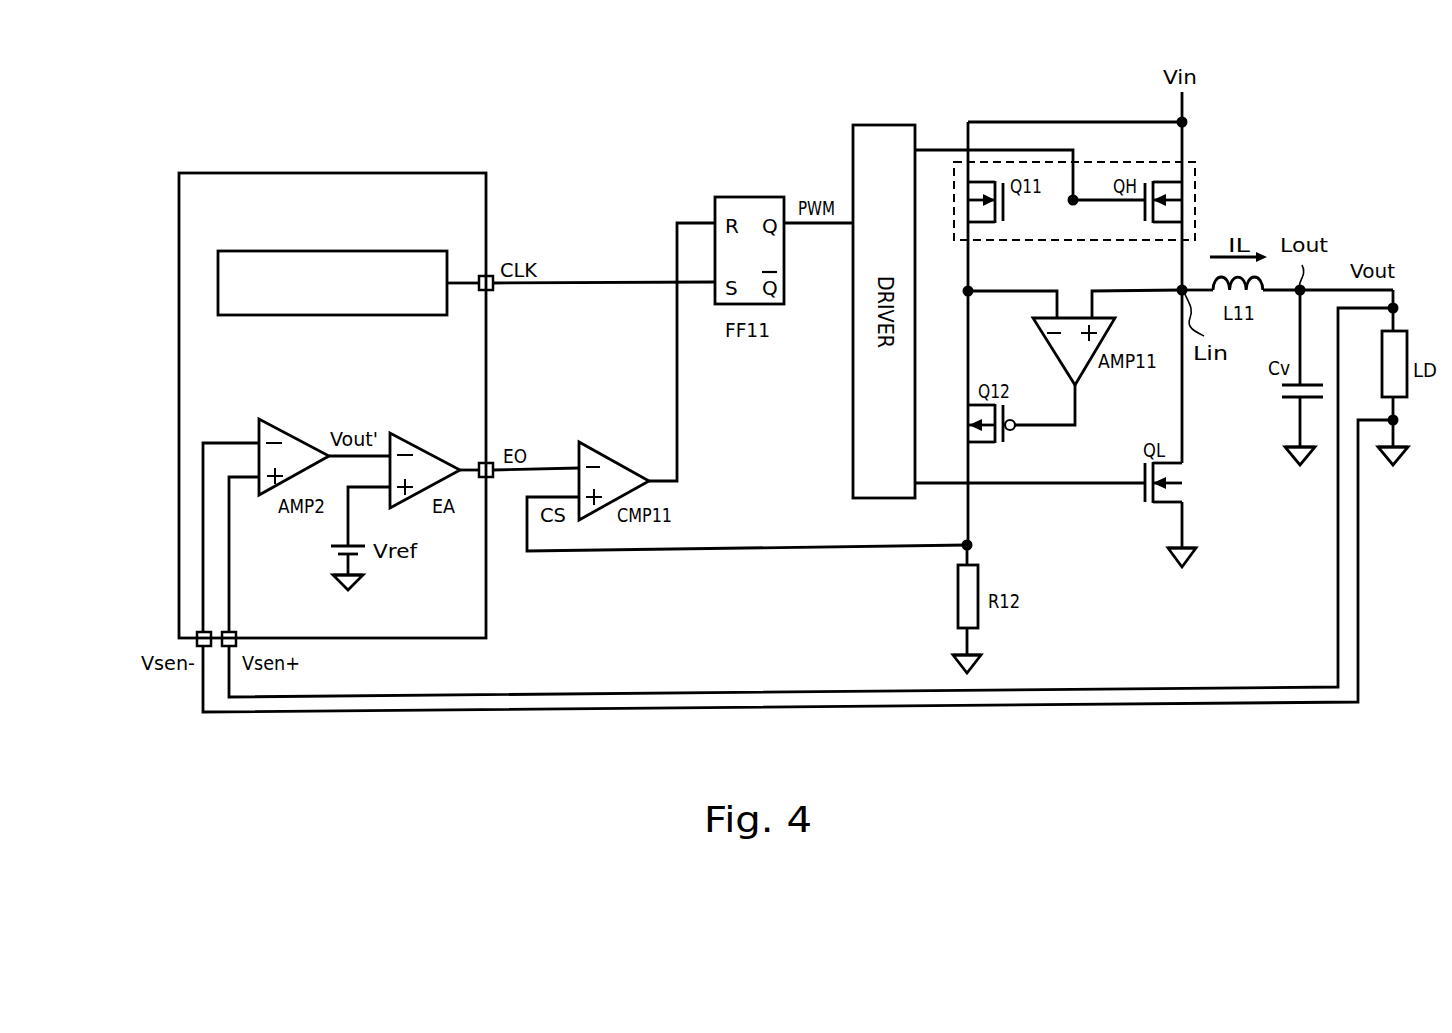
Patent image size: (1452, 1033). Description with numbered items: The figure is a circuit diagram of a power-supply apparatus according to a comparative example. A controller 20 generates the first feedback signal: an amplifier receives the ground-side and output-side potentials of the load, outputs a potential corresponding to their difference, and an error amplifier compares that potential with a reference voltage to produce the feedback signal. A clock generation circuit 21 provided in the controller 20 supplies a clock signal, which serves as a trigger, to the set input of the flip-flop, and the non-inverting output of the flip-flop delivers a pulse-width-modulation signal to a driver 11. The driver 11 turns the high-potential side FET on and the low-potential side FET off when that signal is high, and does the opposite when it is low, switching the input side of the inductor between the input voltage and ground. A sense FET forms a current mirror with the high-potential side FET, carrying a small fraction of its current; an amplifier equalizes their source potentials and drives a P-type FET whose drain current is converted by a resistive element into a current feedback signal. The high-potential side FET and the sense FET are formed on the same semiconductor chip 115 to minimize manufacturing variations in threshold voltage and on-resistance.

The controller 20 is at (432, 173).
The clock generation circuit 21 is at (370, 251).
The driver 11 is at (895, 124).
The semiconductor chip 115 is at (1195, 167).